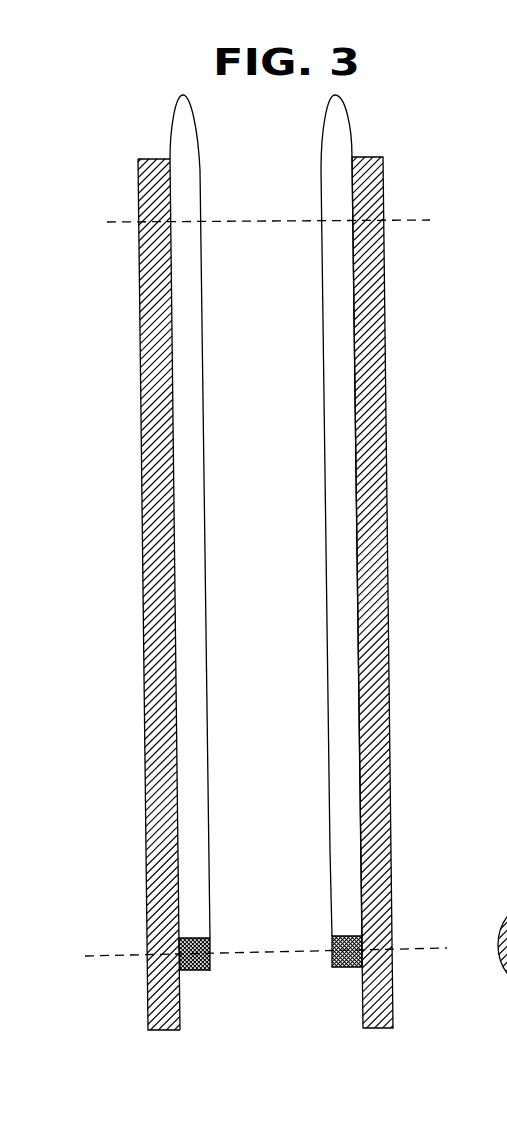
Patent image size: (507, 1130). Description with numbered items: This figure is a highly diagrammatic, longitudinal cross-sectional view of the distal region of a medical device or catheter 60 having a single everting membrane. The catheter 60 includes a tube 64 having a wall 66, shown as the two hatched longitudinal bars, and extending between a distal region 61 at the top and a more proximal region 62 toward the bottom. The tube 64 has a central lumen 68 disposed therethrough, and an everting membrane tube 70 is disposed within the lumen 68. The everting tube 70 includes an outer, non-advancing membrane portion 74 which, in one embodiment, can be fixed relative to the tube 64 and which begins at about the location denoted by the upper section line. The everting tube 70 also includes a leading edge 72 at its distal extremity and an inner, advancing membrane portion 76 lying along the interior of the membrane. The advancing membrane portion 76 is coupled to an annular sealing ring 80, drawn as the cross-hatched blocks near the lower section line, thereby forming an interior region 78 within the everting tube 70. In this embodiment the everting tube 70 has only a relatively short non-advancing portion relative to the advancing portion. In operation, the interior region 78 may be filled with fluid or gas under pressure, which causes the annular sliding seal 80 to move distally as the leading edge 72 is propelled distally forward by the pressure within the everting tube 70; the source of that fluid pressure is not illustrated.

The catheter 60 is at (119, 50).
The distal region 61 is at (138, 185).
The proximal region 62 is at (148, 990).
The tube 64 is at (138, 252).
The wall 66 is at (153, 296).
The central lumen 68 is at (251, 996).
The everting membrane tube 70 is at (380, 110).
The leading edge 72 is at (337, 94).
The non-advancing membrane portion 74 is at (172, 127).
The advancing membrane portion 76 is at (203, 533).
The interior region 78 is at (338, 870).
The annular sealing ring 80 is at (183, 950).